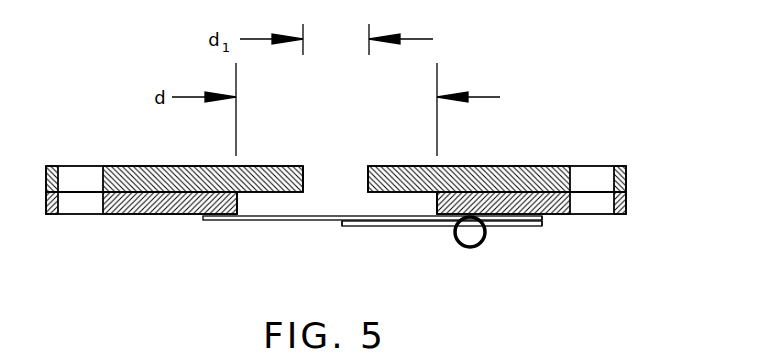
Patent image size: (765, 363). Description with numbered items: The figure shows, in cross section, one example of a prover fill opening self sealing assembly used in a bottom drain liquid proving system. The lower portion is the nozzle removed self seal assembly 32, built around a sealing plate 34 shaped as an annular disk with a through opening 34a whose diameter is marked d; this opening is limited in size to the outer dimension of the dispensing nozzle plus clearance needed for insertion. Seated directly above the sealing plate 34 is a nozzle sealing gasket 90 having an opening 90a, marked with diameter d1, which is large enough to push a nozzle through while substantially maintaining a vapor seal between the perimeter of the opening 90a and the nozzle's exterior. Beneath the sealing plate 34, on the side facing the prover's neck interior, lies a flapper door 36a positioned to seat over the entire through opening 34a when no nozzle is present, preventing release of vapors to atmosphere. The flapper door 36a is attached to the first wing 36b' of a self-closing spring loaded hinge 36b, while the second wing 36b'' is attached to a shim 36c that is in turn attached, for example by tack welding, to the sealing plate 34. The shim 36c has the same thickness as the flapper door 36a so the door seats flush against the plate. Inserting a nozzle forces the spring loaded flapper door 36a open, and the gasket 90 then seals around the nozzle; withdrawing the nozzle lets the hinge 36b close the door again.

The nozzle removed self seal assembly 32 is at (643, 193).
The sealing plate 34 is at (155, 215).
The through opening 34a is at (338, 208).
The flapper door 36a is at (256, 218).
The self-closing spring loaded hinge 36b is at (442, 254).
The first wing 36b' is at (270, 259).
The second wing 36b'' is at (598, 262).
The shim 36c is at (543, 218).
The nozzle sealing gasket 90 is at (500, 166).
The opening 90a is at (325, 176).